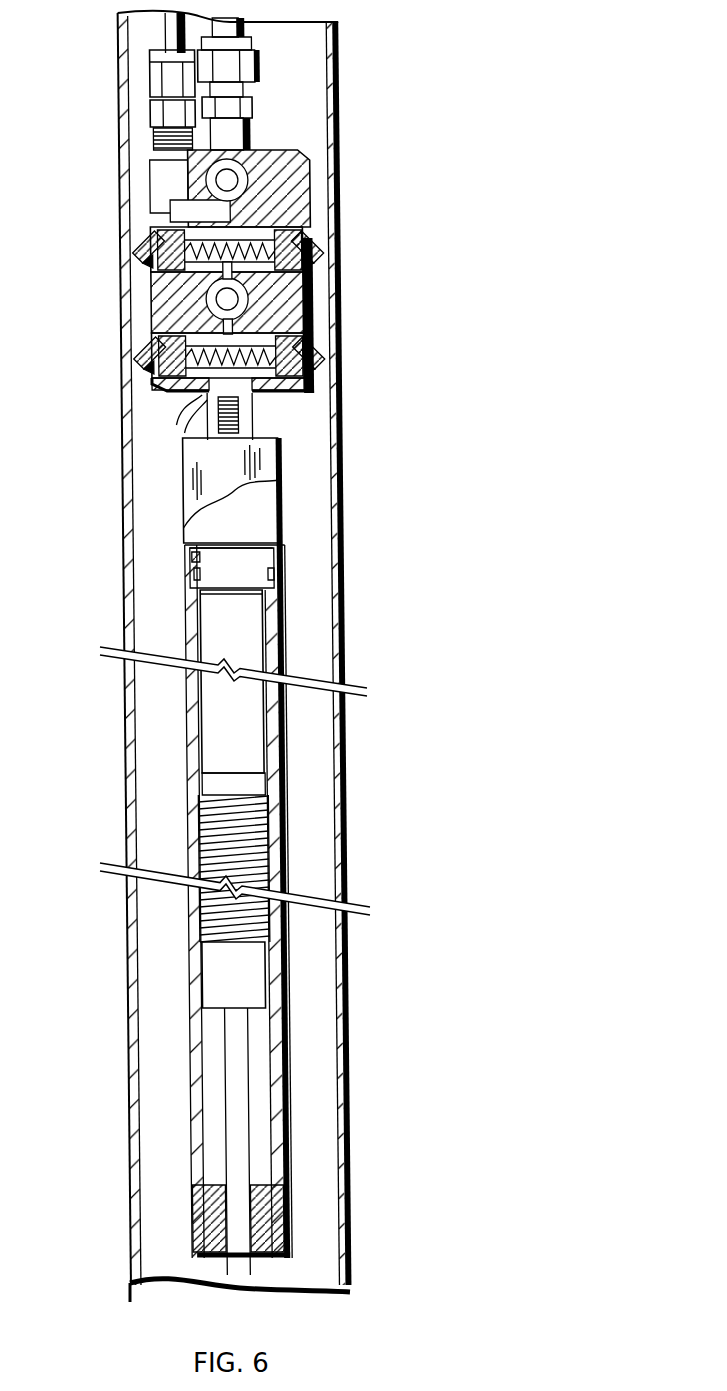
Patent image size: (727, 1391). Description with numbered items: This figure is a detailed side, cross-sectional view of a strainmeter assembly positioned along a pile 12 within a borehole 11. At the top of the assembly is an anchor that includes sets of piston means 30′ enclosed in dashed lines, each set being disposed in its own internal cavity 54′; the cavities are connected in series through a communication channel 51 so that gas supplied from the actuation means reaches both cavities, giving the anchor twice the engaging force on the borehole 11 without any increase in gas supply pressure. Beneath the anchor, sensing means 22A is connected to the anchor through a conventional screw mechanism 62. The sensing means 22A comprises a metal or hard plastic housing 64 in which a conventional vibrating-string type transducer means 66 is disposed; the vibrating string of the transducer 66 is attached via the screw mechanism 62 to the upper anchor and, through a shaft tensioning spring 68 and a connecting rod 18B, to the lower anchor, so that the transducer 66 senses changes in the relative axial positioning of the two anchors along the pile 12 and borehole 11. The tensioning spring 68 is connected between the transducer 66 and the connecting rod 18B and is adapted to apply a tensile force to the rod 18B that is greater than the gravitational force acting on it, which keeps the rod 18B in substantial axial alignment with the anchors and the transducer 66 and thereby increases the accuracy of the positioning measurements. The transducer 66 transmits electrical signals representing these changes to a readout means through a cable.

The borehole 11 is at (158, 711).
The pile 12 is at (123, 787).
The connecting rod 18B is at (266, 1272).
The sensing means 22A is at (294, 501).
The first set of piston means 30′ is at (310, 228).
The communication channel 51 is at (240, 300).
The first internal cavity 54′ is at (200, 233).
The screw mechanism 62 is at (240, 432).
The housing 64 is at (285, 648).
The transducer means 66 is at (248, 613).
The tensioning spring 68 is at (243, 841).